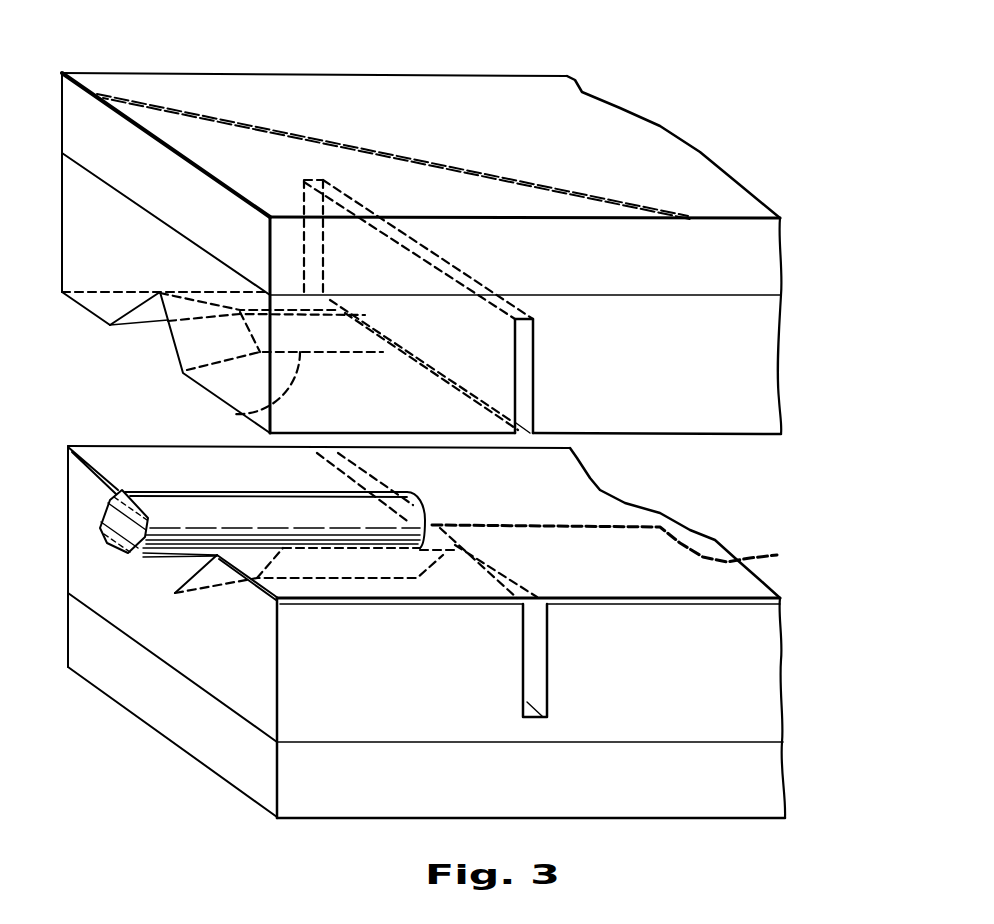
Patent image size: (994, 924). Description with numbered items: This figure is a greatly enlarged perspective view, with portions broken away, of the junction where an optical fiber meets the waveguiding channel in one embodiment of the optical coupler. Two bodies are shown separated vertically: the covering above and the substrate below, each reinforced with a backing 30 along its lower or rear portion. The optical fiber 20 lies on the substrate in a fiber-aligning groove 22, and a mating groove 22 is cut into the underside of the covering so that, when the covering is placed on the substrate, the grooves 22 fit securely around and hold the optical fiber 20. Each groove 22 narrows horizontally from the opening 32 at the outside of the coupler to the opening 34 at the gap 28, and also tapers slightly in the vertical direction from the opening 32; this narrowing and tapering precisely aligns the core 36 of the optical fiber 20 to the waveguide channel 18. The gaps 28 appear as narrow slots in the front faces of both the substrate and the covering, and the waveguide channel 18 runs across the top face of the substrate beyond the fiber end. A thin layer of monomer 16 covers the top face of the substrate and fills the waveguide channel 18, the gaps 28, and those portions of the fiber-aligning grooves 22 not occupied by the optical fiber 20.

The monomer layer 16 is at (598, 492).
The waveguide channel 18 is at (625, 546).
The optical fiber 20 is at (185, 503).
The fiber-aligning grooves 22 is at (157, 310).
The gap 28 is at (525, 370).
The backing 30 is at (757, 243).
The opening 32 is at (155, 312).
The opening 34 is at (233, 414).
The core 36 is at (100, 527).